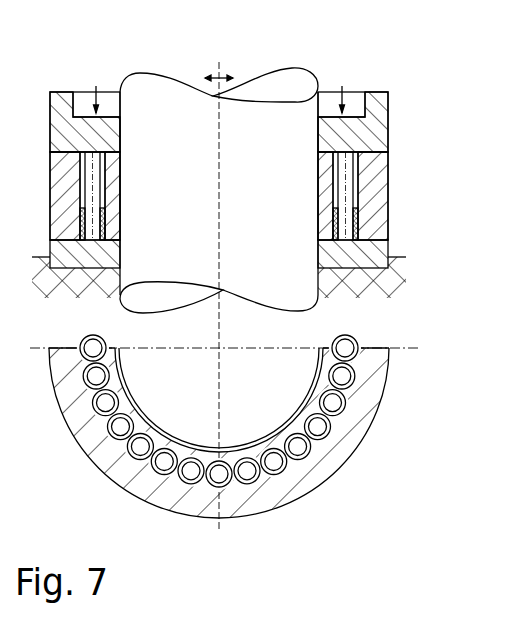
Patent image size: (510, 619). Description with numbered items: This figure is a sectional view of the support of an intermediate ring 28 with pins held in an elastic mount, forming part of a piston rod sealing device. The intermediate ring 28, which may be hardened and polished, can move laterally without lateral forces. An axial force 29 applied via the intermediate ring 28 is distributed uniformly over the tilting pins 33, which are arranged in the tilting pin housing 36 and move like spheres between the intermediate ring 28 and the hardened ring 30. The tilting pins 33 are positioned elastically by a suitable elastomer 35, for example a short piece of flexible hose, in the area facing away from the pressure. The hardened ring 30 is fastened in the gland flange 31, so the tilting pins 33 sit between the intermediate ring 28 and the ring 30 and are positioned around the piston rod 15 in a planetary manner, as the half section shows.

The piston rod 15 is at (303, 293).
The intermediate ring 28 is at (390, 112).
The axial force 29 is at (350, 85).
The hardened ring 30 is at (390, 248).
The gland flange 31 is at (394, 282).
The tilting pins 33 is at (356, 171).
The elastomer 35 is at (360, 222).
The tilting pin housing 36 is at (390, 195).